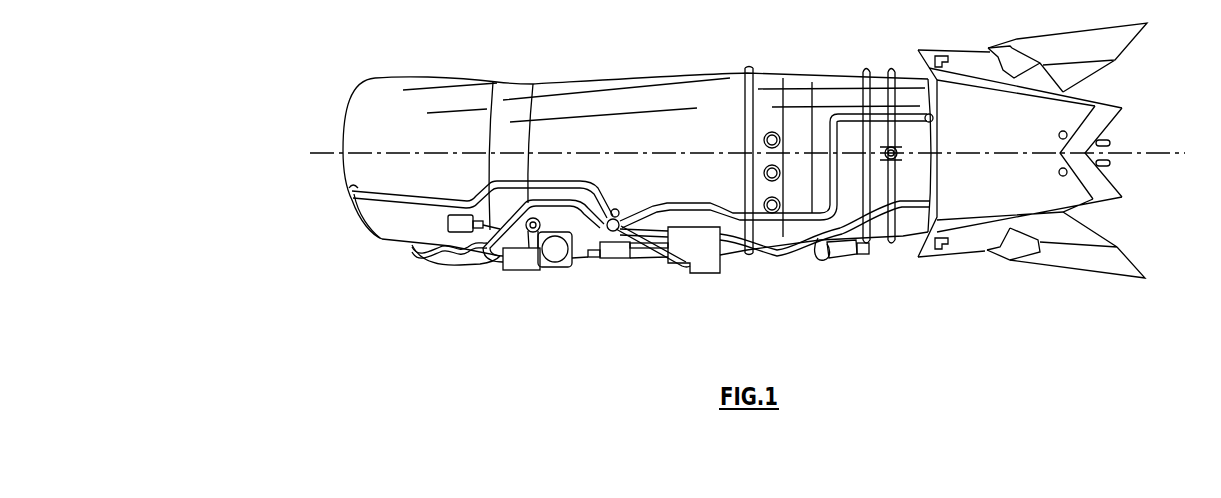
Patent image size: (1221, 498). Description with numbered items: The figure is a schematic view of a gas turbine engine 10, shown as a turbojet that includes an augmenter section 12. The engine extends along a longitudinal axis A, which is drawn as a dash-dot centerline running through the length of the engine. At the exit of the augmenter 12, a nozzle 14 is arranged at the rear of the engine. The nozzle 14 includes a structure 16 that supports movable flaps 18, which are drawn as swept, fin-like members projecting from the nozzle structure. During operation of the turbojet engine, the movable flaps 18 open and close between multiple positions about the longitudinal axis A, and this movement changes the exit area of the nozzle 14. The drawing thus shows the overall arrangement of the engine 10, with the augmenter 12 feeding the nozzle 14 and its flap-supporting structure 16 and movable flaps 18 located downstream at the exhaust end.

The gas turbine engine 10 is at (493, 311).
The augmenter section 12 is at (856, 267).
The nozzle 14 is at (971, 285).
The structure 16 is at (963, 206).
The movable flaps 18 is at (1067, 262).
The longitudinal axis A is at (1158, 153).